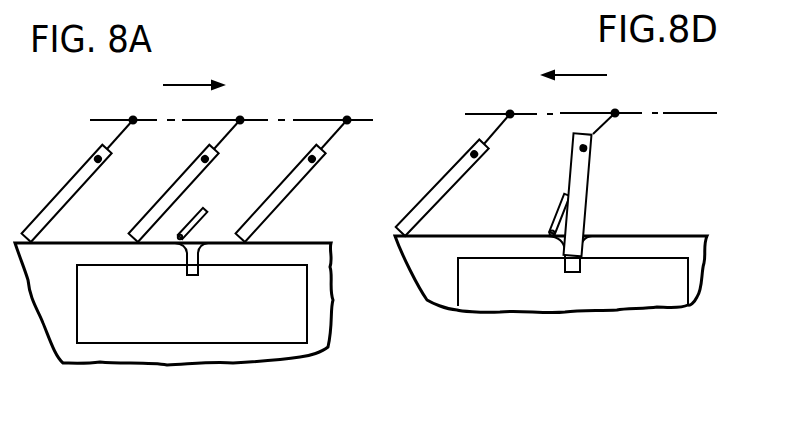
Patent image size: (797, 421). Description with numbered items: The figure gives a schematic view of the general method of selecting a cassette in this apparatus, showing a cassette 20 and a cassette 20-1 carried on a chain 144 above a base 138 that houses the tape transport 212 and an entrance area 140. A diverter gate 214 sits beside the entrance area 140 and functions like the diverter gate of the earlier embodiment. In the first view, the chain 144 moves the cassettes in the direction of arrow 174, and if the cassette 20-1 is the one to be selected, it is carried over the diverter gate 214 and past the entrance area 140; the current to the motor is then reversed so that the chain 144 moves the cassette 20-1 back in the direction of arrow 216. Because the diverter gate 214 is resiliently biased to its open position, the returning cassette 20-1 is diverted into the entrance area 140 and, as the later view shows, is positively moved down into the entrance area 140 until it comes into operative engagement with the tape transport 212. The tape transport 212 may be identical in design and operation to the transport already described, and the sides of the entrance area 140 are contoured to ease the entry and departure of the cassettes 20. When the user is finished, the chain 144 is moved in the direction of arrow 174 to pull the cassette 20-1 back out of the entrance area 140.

In FIG. 8A, the cassette 20 is at (292, 167).
In FIG. 8A, the cassette 20-1 is at (192, 166).
In FIG. 8D, the cassette 20-1 is at (585, 163).
In FIG. 8A, the base 138 is at (283, 234).
In FIG. 8D, the base 138 is at (629, 231).
In FIG. 8A, the entrance area 140 is at (248, 178).
In FIG. 8D, the entrance area 140 is at (583, 282).
In FIG. 8A, the chain 144 is at (306, 118).
In FIG. 8D, the chain 144 is at (528, 113).
In FIG. 8A, the arrow 174 is at (192, 85).
In FIG. 8A, the tape transport 212 is at (200, 331).
In FIG. 8D, the tape transport 212 is at (518, 300).
In FIG. 8A, the diverter gate 214 is at (182, 225).
In FIG. 8D, the diverter gate 214 is at (555, 216).
In FIG. 8D, the arrow 216 is at (570, 75).